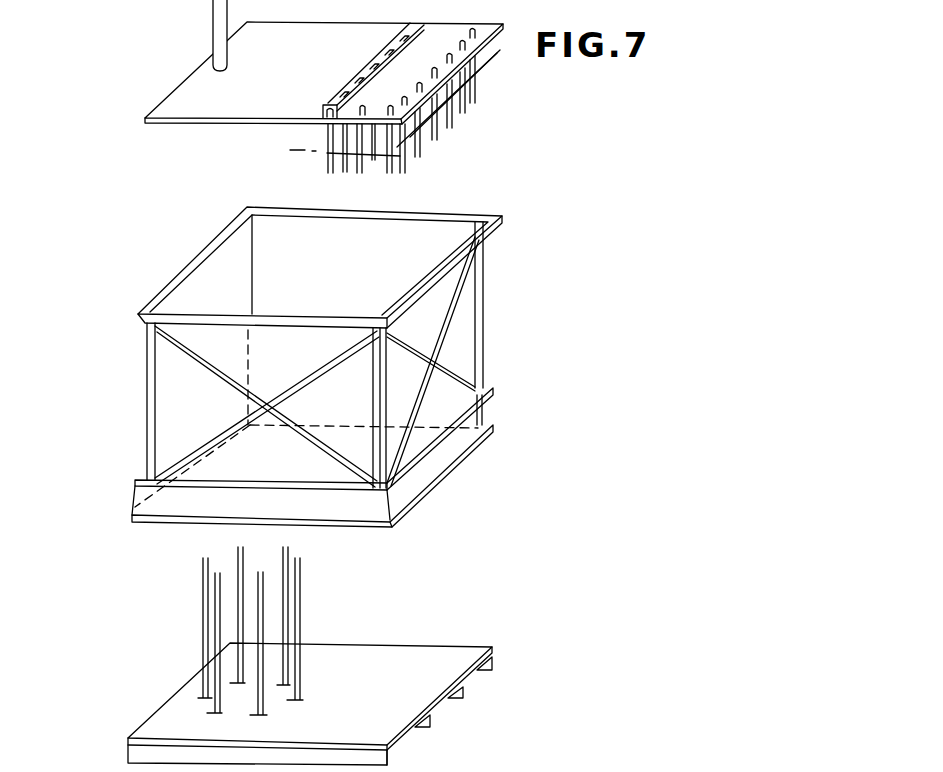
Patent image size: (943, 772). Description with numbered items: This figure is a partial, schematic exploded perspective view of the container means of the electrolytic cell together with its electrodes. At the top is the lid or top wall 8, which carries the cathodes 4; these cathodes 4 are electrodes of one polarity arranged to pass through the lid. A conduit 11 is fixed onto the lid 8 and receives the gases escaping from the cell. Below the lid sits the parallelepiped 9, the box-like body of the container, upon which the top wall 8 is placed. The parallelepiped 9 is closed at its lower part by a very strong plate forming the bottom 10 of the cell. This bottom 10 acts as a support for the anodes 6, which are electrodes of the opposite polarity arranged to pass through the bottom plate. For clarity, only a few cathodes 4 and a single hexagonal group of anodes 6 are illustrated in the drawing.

The cathodes 4 is at (478, 96).
The anodes 6 is at (300, 604).
The top wall 8 is at (183, 97).
The parallelepiped 9 is at (160, 393).
The bottom 10 is at (157, 725).
The conduit 11 is at (207, 35).